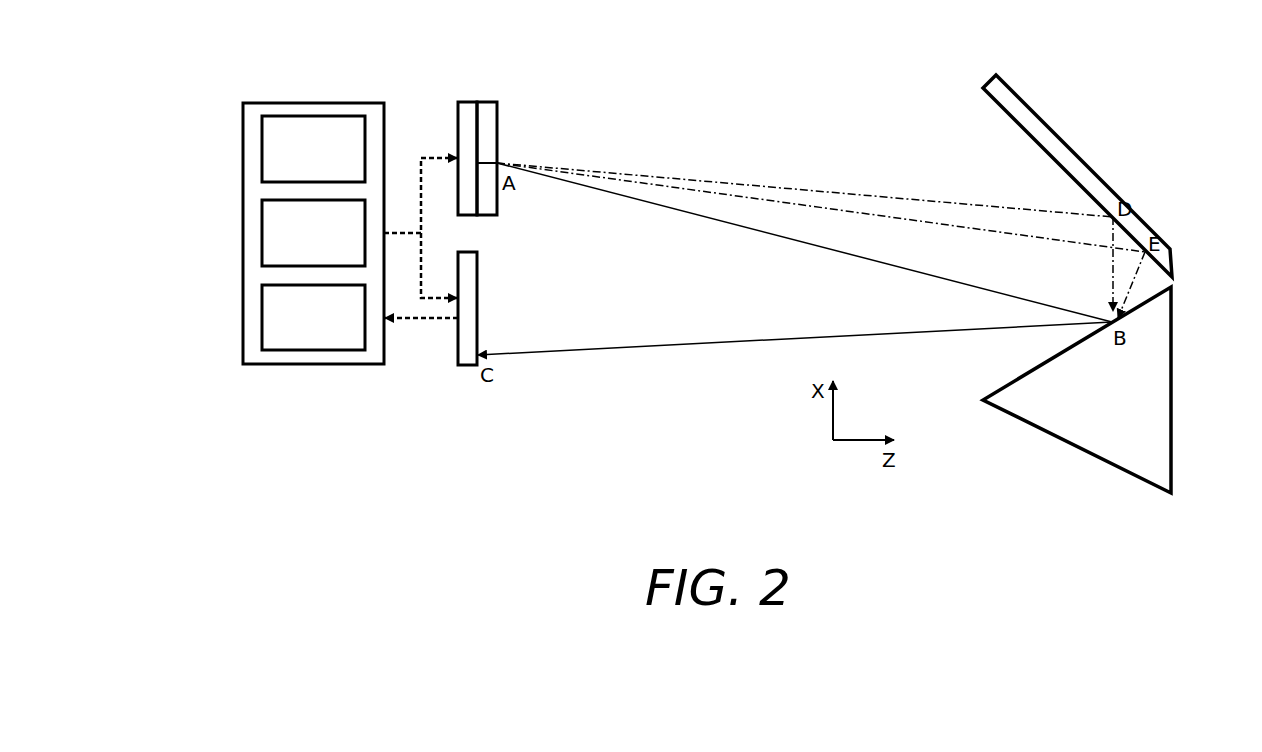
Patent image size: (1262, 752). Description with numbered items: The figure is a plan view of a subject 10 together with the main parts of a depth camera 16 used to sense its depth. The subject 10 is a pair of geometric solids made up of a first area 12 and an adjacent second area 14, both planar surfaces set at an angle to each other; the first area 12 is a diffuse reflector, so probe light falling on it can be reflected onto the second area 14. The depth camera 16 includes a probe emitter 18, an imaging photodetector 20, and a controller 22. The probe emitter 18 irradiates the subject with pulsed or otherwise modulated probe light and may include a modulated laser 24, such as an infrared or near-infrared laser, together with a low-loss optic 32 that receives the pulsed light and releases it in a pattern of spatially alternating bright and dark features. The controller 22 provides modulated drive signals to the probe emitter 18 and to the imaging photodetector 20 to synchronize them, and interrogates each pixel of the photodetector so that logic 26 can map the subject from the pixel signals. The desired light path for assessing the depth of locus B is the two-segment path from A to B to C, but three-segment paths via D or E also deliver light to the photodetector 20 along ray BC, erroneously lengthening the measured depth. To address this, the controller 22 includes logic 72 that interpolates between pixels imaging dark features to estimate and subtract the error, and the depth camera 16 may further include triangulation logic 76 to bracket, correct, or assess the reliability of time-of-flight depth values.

The subject 10 is at (1215, 208).
The first area 12 is at (1008, 113).
The second area 14 is at (1018, 377).
The depth camera 16 is at (347, 417).
The probe emitter 18 is at (478, 83).
The imaging photodetector 20 is at (478, 273).
The controller 22 is at (243, 238).
The modulated laser 24 is at (458, 128).
The logic 26 is at (313, 149).
The low-loss optic 32 is at (497, 126).
The logic 72 is at (313, 233).
The triangulation logic 76 is at (313, 317).